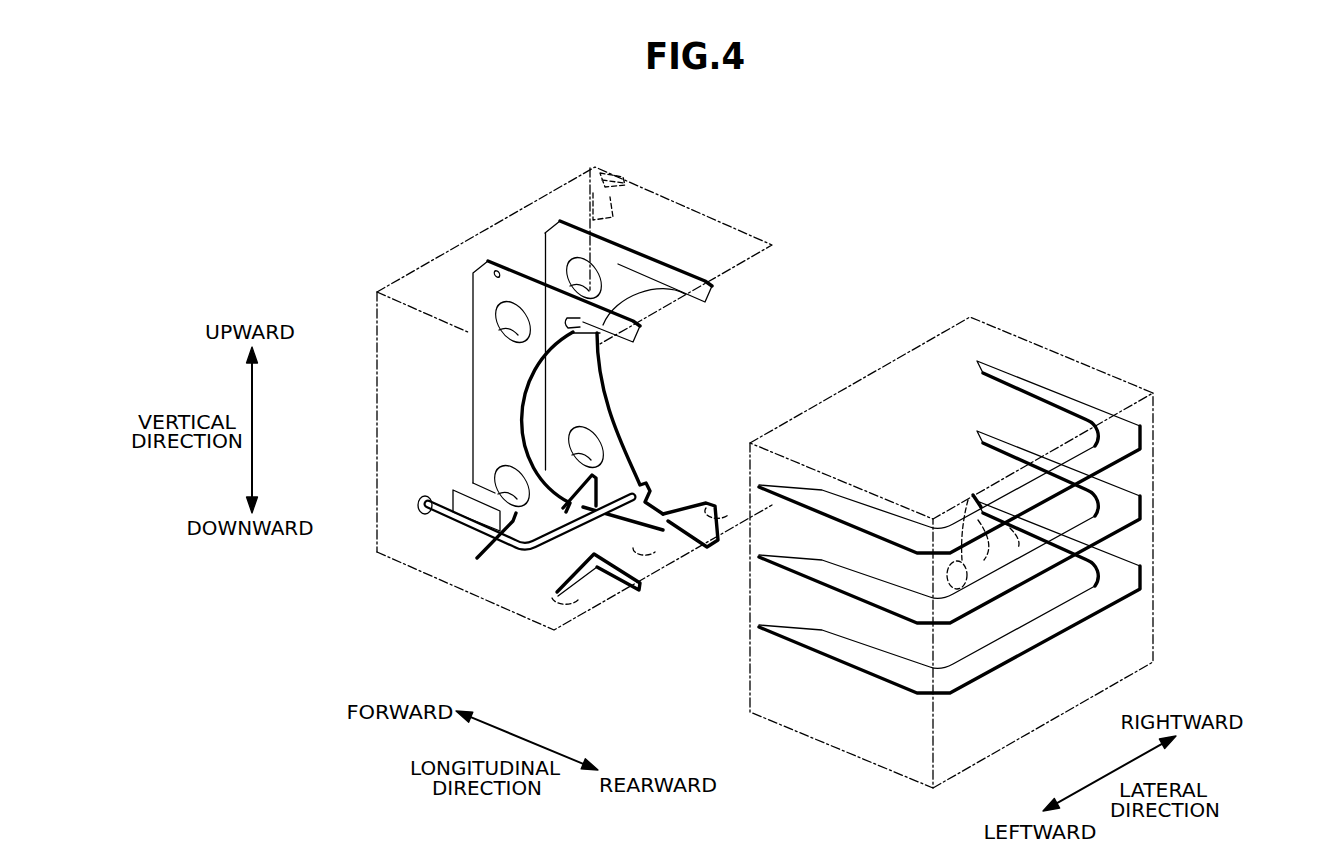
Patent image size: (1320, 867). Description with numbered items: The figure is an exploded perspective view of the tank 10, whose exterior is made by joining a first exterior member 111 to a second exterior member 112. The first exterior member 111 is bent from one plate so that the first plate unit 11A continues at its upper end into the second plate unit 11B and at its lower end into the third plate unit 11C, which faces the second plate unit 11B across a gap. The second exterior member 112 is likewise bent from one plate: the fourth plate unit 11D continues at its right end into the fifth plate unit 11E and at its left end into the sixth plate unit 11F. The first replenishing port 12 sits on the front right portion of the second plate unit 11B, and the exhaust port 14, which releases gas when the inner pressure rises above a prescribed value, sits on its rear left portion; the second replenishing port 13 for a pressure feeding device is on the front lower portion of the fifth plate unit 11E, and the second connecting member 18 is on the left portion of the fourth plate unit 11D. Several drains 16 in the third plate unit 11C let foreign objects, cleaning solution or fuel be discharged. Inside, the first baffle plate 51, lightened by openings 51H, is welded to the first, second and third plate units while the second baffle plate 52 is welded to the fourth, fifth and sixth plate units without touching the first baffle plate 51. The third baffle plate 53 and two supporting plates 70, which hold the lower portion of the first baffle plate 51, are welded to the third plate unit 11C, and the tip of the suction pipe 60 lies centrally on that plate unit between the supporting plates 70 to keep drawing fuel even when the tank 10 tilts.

The tank 10 is at (1063, 290).
The first plate unit 11A is at (390, 443).
The second plate unit 11B is at (513, 233).
The third plate unit 11C is at (475, 585).
The fourth plate unit 11D is at (1138, 541).
The fifth plate unit 11E is at (1092, 383).
The sixth plate unit 11F is at (800, 707).
The first replenishing port 12 is at (614, 172).
The second replenishing port 13 is at (963, 500).
The exhaust port 14 is at (582, 320).
The drain 16 is at (578, 600).
The second connecting member 18 is at (940, 515).
The first baffle plate 51 is at (562, 236).
The opening 51H is at (588, 268).
The second baffle plate 52 is at (1122, 439).
The third baffle plate 53 is at (622, 463).
The suction pipe 60 is at (549, 548).
The supporting plate 70 is at (485, 560).
The first exterior member 111 is at (538, 378).
The second exterior member 112 is at (994, 551).